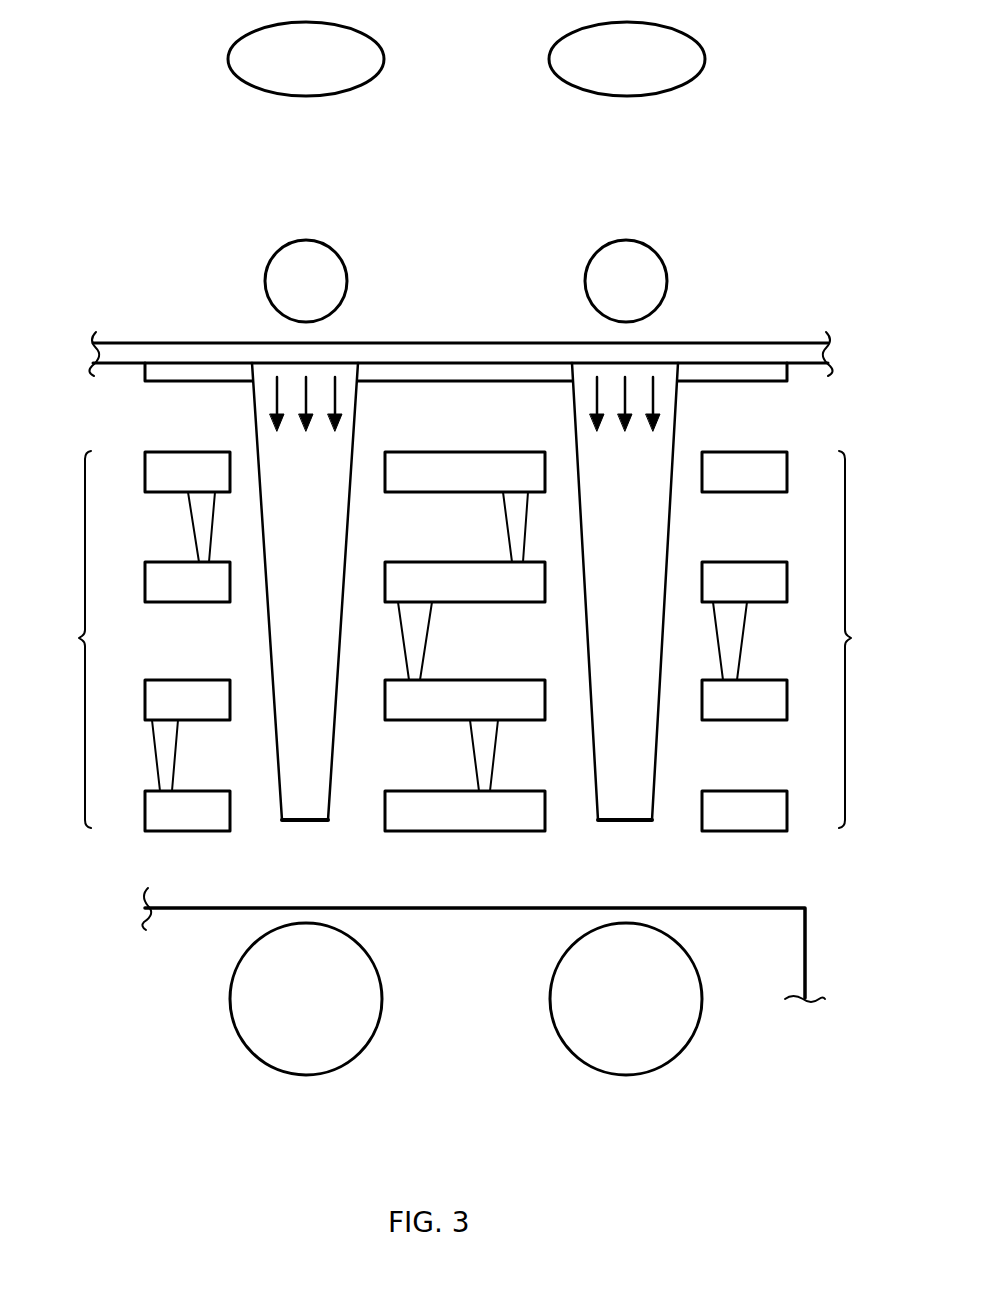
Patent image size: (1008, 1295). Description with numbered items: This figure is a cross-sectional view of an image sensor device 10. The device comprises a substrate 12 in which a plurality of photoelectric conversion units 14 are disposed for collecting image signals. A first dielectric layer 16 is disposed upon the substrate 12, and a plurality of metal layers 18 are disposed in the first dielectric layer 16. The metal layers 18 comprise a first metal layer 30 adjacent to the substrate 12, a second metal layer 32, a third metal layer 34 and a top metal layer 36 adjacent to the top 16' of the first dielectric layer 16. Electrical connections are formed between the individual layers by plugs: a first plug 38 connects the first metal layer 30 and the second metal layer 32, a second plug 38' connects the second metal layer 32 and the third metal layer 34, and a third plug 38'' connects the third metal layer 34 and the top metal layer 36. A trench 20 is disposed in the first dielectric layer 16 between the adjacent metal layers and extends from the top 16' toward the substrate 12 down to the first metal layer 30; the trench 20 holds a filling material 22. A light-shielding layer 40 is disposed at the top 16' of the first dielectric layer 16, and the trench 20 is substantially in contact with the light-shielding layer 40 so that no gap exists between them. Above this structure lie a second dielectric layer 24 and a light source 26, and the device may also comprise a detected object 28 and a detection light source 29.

The image sensor device 10 is at (113, 231).
The substrate 12 is at (790, 952).
The photoelectric conversion units 14 is at (306, 1072).
The first dielectric layer 16 is at (818, 868).
The top of the first dielectric layer 16' is at (834, 401).
The metal layers 18 is at (466, 639).
The trench 20 is at (264, 640).
The filling material 22 is at (326, 750).
The second dielectric layer 24 is at (812, 340).
The light source 26 is at (523, 281).
The detected object 28 is at (651, 282).
The detection light source 29 is at (228, 58).
The first metal layer 30 is at (151, 810).
The second metal layer 32 is at (151, 699).
The third metal layer 34 is at (151, 581).
The top metal layer 36 is at (151, 470).
The first plug 38 is at (352, 755).
The second plug 38' is at (602, 641).
The third plug 38'' is at (327, 527).
The light-shielding layer 40 is at (202, 375).